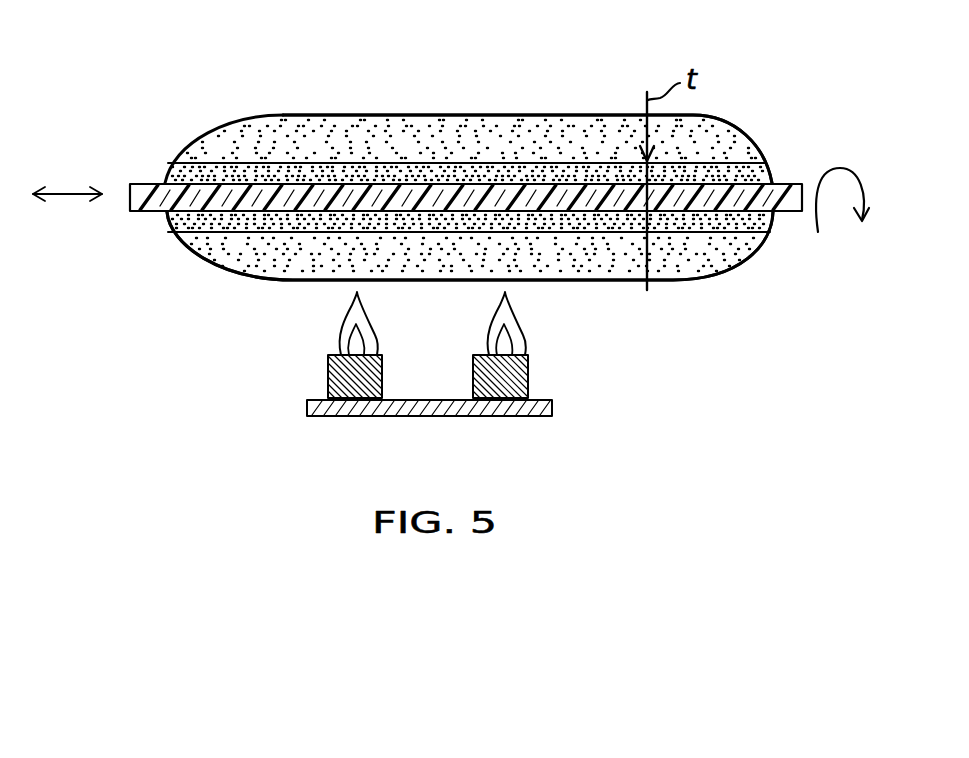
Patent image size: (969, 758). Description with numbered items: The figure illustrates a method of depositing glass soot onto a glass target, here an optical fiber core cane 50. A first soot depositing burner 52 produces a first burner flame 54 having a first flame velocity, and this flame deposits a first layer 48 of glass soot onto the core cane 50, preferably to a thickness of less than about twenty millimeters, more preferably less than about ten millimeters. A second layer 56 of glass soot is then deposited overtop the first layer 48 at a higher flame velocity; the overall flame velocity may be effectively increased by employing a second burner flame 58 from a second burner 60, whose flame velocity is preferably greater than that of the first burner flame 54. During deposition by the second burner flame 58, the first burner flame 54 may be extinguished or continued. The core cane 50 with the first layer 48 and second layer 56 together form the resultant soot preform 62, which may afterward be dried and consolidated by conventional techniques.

The first layer of glass soot 48 is at (395, 162).
The optical fiber core cane 50 is at (150, 212).
The first soot depositing burner 52 is at (328, 378).
The first burner flame 54 is at (378, 330).
The second layer of glass soot 56 is at (515, 114).
The second burner flame 58 is at (528, 335).
The second burner 60 is at (528, 375).
The soot preform 62 is at (296, 96).